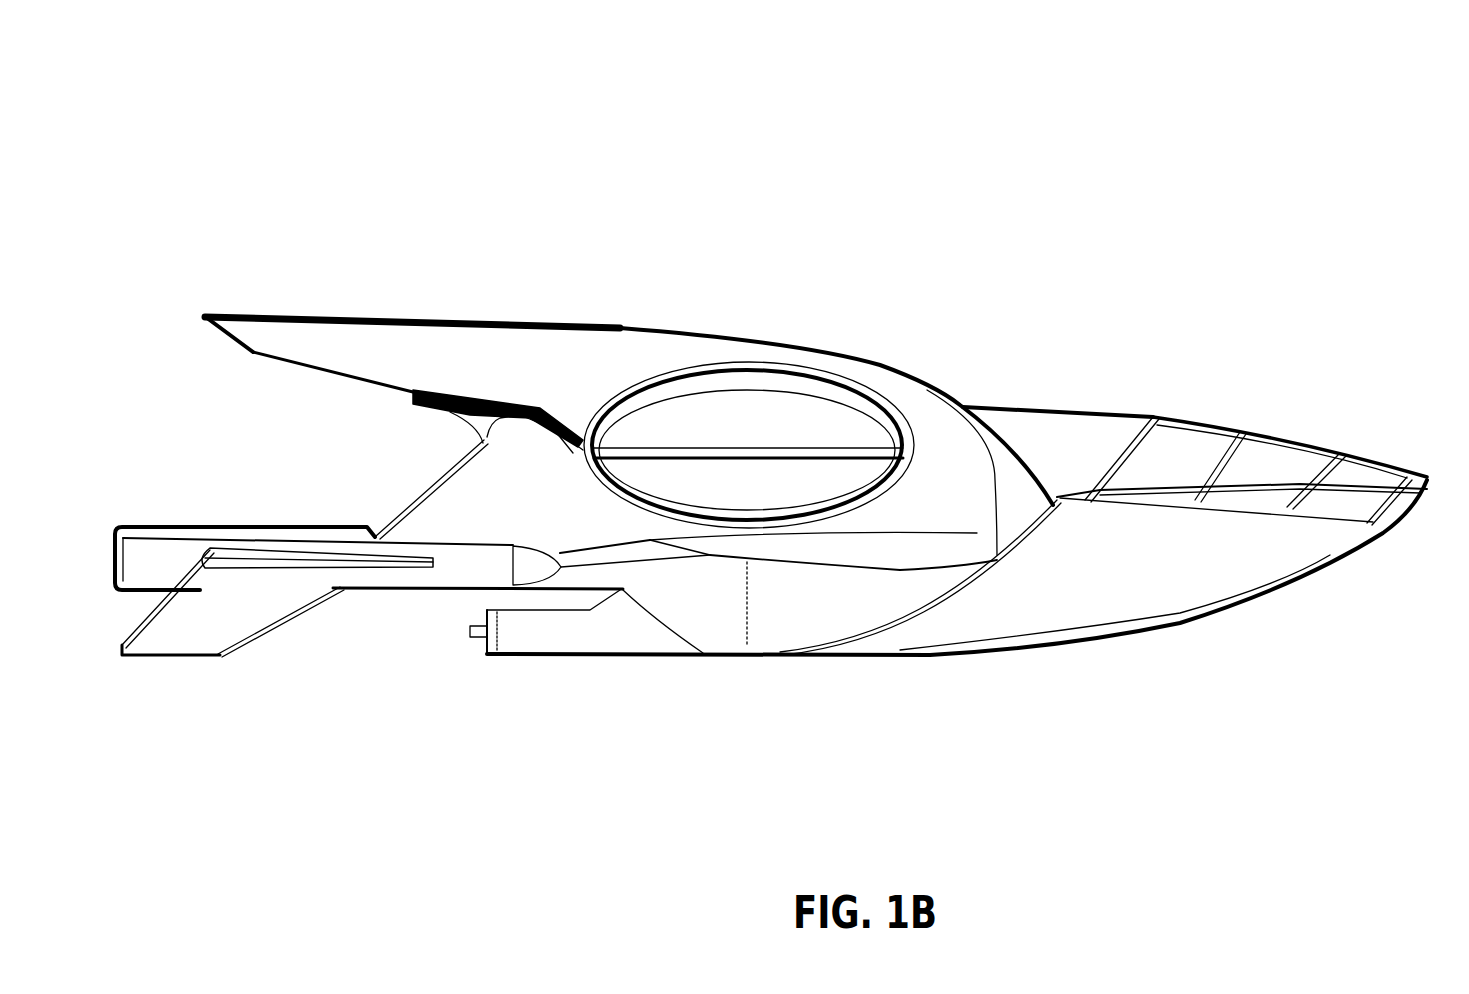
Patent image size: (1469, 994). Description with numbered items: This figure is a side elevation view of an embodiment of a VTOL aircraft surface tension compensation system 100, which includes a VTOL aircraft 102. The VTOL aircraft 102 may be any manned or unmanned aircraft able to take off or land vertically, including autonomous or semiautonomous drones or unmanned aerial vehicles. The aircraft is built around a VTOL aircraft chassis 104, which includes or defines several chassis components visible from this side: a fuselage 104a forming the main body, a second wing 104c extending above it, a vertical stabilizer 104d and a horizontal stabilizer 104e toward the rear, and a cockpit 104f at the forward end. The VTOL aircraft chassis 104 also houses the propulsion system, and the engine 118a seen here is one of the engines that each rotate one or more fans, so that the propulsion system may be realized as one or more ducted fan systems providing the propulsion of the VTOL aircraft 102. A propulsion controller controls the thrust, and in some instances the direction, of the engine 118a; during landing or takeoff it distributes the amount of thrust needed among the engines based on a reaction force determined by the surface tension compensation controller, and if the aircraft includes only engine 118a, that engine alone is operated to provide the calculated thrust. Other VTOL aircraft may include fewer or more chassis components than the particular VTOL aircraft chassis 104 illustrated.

The VTOL aircraft surface tension compensation system 100 is at (228, 62).
The VTOL aircraft 102 is at (280, 182).
The VTOL aircraft chassis 104 is at (785, 653).
The fuselage 104a is at (958, 642).
The second wing 104c is at (312, 307).
The vertical stabilizer 104d is at (207, 630).
The horizontal stabilizer 104e is at (563, 463).
The cockpit 104f is at (1377, 513).
The engine 118a is at (788, 383).